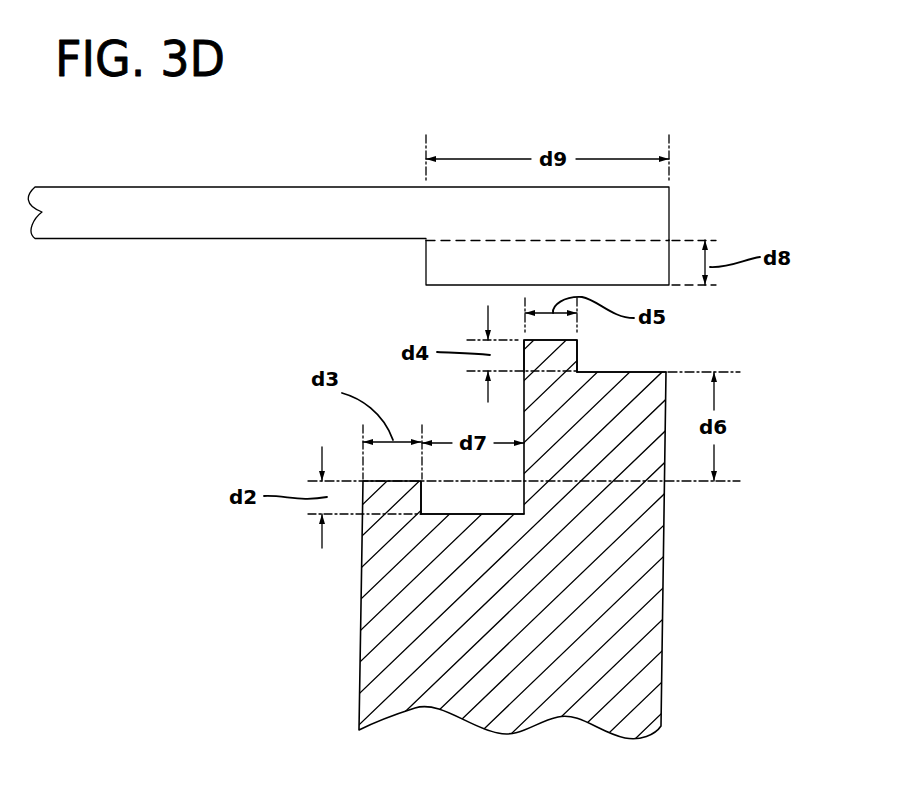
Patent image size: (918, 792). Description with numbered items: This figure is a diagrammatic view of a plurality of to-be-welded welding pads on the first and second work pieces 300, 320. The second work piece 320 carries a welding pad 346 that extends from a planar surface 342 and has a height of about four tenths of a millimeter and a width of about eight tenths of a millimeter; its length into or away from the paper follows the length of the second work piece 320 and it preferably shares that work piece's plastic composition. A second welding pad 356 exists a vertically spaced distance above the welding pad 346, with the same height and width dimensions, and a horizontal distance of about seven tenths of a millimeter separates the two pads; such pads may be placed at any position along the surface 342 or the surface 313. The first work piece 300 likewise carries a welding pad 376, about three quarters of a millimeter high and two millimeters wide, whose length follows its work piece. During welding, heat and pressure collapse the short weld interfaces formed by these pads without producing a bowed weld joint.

The first work piece 300 is at (340, 187).
The welding pad 376 is at (440, 263).
The second work piece 320 is at (663, 563).
The second welding pad 356 is at (578, 353).
The surface 313 is at (637, 372).
The planar surface 342 is at (471, 513).
The welding pad 346 is at (420, 495).